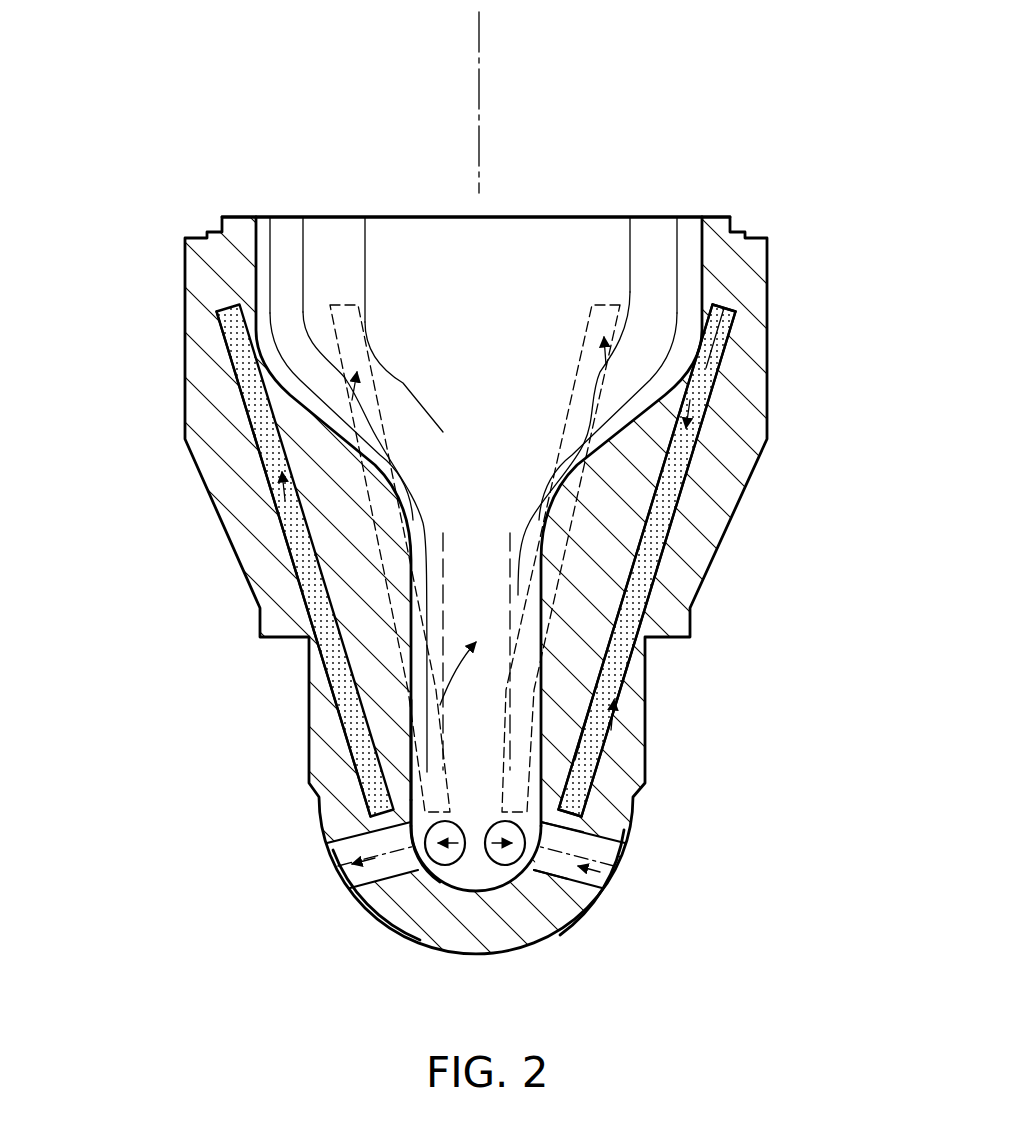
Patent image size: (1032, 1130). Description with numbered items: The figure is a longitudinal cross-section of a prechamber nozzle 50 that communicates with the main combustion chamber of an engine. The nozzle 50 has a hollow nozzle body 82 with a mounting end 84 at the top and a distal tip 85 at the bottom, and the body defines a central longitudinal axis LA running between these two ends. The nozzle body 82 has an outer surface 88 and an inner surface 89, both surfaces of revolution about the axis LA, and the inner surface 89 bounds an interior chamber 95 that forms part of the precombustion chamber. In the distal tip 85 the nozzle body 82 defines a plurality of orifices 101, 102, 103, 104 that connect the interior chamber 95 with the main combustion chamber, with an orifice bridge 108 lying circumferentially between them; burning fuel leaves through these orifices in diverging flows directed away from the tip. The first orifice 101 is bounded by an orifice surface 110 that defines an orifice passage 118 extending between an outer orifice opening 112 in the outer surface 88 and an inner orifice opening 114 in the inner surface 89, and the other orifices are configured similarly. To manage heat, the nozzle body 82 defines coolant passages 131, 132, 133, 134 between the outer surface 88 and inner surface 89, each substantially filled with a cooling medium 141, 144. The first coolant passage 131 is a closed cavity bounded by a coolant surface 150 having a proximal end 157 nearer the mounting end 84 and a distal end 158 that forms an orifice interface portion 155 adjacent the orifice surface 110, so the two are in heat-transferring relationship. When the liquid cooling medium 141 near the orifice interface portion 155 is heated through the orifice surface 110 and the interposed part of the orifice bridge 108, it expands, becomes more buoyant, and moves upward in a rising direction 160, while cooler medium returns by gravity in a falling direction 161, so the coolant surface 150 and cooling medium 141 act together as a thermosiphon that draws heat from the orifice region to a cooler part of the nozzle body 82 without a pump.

The nozzle 50 is at (196, 164).
The central longitudinal axis LA is at (479, 104).
The nozzle body 82 is at (192, 307).
The mounting end 84 is at (722, 212).
The distal tip 85 is at (393, 905).
The outer surface 88 is at (600, 905).
The inner surface 89 is at (506, 321).
The interior chamber 95 is at (412, 742).
The first orifice 101 is at (598, 855).
The second orifice 102 is at (472, 870).
The third orifice 103 is at (418, 870).
The fourth orifice 104 is at (360, 866).
The orifice bridge 108 is at (478, 840).
The orifice surface 110 is at (585, 912).
The outer orifice opening 112 is at (613, 868).
The inner orifice opening 114 is at (512, 880).
The orifice passage 118 is at (573, 865).
The first coolant passage 131 is at (683, 510).
The second coolant passage 132 is at (605, 365).
The third coolant passage 133 is at (343, 440).
The fourth coolant passage 134 is at (287, 524).
The cooling medium 141 is at (673, 532).
The cooling medium 144 is at (301, 537).
The coolant surface 150 is at (657, 570).
The orifice interface portion 155 is at (575, 775).
The proximal end 157 is at (735, 325).
The distal end 158 is at (600, 812).
The rising direction 160 is at (610, 730).
The falling direction 161 is at (705, 407).